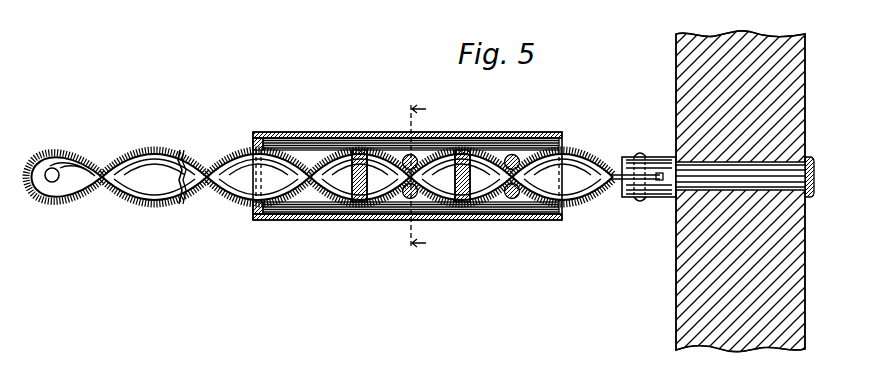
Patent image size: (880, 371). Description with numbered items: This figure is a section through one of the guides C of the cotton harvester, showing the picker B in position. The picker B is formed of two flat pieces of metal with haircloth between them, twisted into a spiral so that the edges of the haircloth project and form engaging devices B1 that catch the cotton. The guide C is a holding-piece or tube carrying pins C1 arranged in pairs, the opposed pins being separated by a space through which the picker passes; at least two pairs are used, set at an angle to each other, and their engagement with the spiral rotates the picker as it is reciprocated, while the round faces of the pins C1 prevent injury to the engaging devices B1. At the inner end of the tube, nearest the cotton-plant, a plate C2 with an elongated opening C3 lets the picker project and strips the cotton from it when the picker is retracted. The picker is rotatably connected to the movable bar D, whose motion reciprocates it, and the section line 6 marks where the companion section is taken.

The picker B is at (222, 165).
The engaging devices B1 is at (233, 197).
The guide C is at (392, 206).
The pins C1 is at (404, 158).
The plate C2 is at (242, 209).
The elongated opening C3 is at (272, 214).
The movable bar D is at (687, 265).
The section line 6 is at (414, 181).